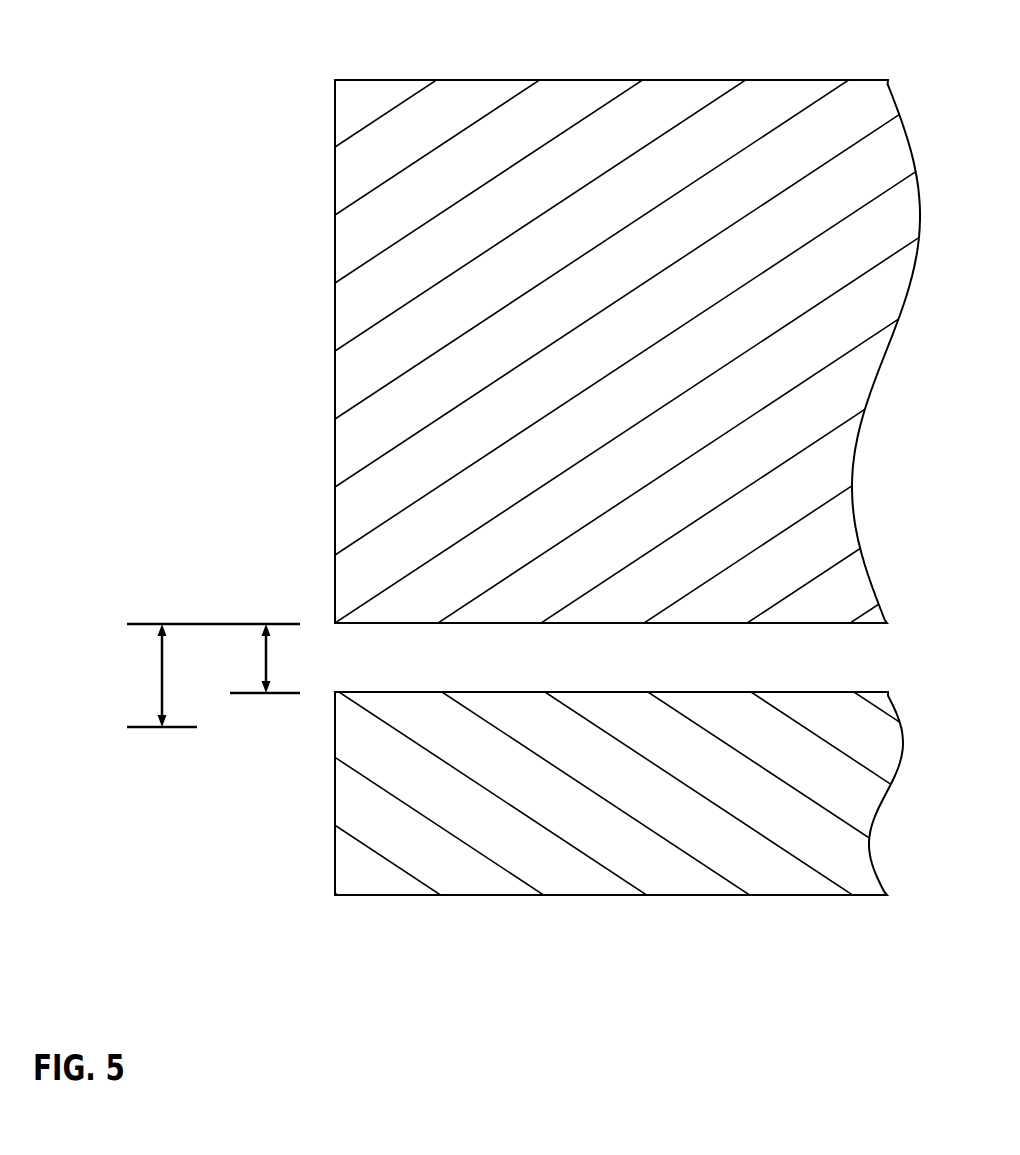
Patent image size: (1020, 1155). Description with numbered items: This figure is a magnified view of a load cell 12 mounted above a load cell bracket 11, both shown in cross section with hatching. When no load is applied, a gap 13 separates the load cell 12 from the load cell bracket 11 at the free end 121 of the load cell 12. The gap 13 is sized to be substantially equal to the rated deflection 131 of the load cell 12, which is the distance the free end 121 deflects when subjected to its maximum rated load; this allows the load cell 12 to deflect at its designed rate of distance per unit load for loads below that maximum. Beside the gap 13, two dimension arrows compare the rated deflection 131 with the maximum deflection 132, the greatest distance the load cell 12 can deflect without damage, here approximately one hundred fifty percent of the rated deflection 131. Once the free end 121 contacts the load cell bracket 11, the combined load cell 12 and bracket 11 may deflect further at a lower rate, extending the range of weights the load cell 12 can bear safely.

The load cell bracket 11 is at (465, 810).
The load cell 12 is at (335, 122).
The free end 121 is at (408, 268).
The gap 13 is at (328, 645).
The rated deflection 131 is at (263, 658).
The maximum deflection 132 is at (160, 677).